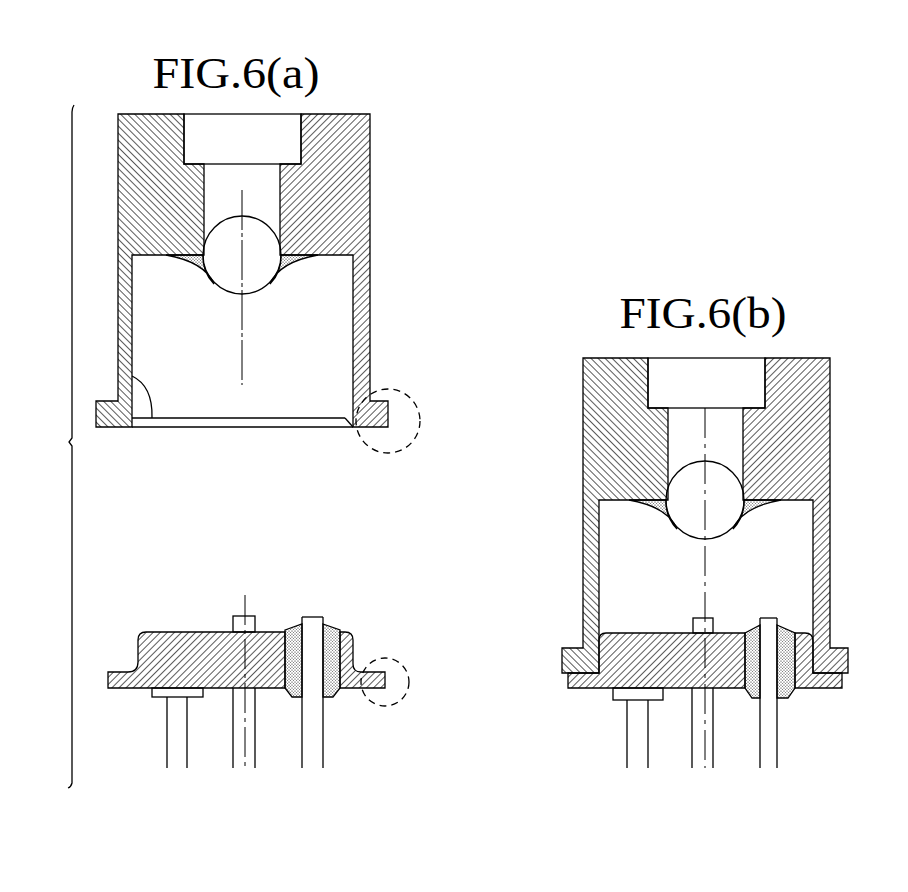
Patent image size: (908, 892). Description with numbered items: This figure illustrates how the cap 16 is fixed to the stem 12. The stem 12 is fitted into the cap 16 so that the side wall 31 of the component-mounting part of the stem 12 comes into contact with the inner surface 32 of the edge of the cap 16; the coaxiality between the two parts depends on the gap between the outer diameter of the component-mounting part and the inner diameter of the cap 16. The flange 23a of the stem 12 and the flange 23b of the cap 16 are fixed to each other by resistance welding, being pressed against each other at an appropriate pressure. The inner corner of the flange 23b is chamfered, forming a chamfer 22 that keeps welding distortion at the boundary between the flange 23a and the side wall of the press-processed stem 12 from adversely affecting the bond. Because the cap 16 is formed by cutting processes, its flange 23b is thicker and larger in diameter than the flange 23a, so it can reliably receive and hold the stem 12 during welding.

The cap 16 is at (115, 212).
The chamfer 22 is at (353, 422).
The inner surface 32 is at (149, 420).
The flange 23b is at (408, 392).
The side wall 31 is at (138, 643).
The stem 12 is at (130, 692).
The flange 23a is at (401, 655).